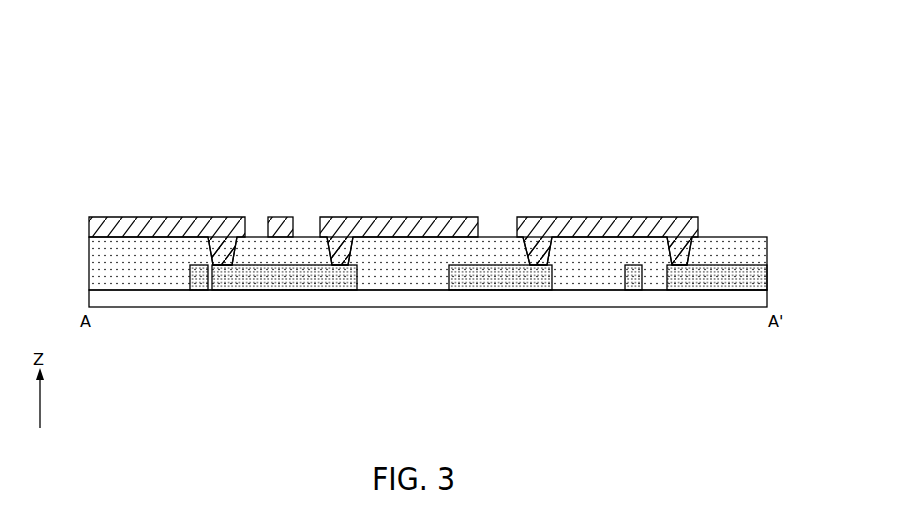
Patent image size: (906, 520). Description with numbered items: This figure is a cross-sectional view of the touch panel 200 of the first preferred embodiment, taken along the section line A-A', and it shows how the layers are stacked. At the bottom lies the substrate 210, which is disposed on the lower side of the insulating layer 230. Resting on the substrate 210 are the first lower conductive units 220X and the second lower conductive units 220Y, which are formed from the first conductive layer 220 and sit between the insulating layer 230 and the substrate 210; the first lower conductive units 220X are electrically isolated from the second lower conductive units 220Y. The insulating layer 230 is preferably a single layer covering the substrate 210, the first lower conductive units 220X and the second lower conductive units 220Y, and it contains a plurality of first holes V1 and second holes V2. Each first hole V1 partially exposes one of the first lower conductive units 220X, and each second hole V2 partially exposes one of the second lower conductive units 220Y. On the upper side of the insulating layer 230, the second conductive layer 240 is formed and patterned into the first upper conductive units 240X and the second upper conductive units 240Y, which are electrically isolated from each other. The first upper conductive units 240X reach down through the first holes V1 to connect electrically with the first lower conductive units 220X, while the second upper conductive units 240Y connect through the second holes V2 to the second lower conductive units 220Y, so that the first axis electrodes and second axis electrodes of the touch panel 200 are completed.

The touch panel 200 is at (668, 84).
The substrate 210 is at (95, 300).
The first conductive layer 220 is at (465, 307).
The first lower conductive unit 220X is at (298, 283).
The second lower conductive unit 220Y is at (198, 283).
The insulating layer 230 is at (90, 268).
The second conductive layer 240 is at (393, 223).
The first upper conductive unit 240X is at (150, 216).
The second upper conductive unit 240Y is at (280, 216).
The first hole V1 is at (223, 247).
The second hole V2 is at (538, 247).